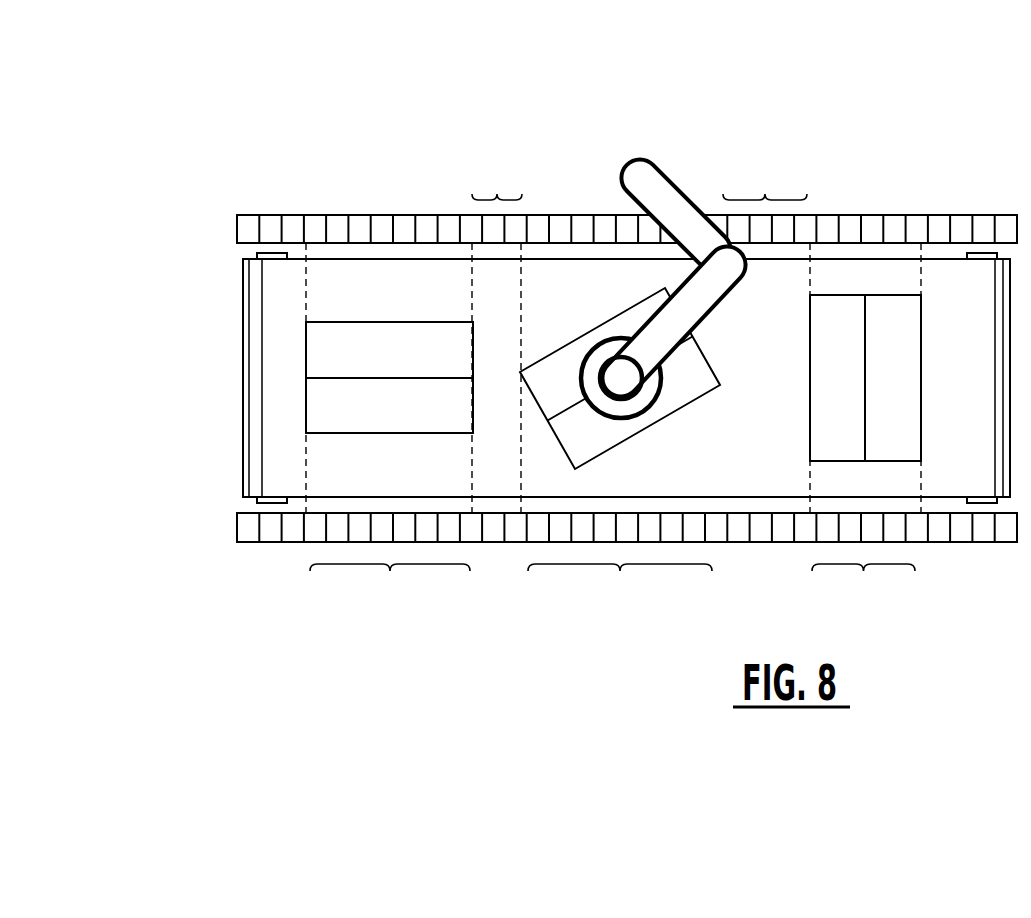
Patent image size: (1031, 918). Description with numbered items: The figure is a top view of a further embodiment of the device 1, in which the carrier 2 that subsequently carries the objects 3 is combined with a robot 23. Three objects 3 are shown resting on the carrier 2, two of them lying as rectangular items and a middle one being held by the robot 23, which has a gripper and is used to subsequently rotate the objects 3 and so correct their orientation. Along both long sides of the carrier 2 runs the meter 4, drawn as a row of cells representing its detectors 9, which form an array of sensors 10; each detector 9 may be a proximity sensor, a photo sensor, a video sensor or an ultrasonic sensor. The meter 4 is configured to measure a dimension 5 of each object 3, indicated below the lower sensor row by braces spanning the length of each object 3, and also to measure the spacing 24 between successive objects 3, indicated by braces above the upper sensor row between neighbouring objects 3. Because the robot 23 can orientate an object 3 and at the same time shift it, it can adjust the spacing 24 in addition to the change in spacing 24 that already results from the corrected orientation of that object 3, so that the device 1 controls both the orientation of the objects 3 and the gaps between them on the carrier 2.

The device 1 is at (900, 118).
The carrier 2 is at (188, 386).
The object 3 is at (372, 343).
The meter 4 is at (186, 229).
The dimension 5 is at (612, 586).
The detector 9 is at (447, 228).
The array of sensors 10 is at (520, 530).
The robot 23 is at (648, 180).
The spacing 24 is at (639, 180).